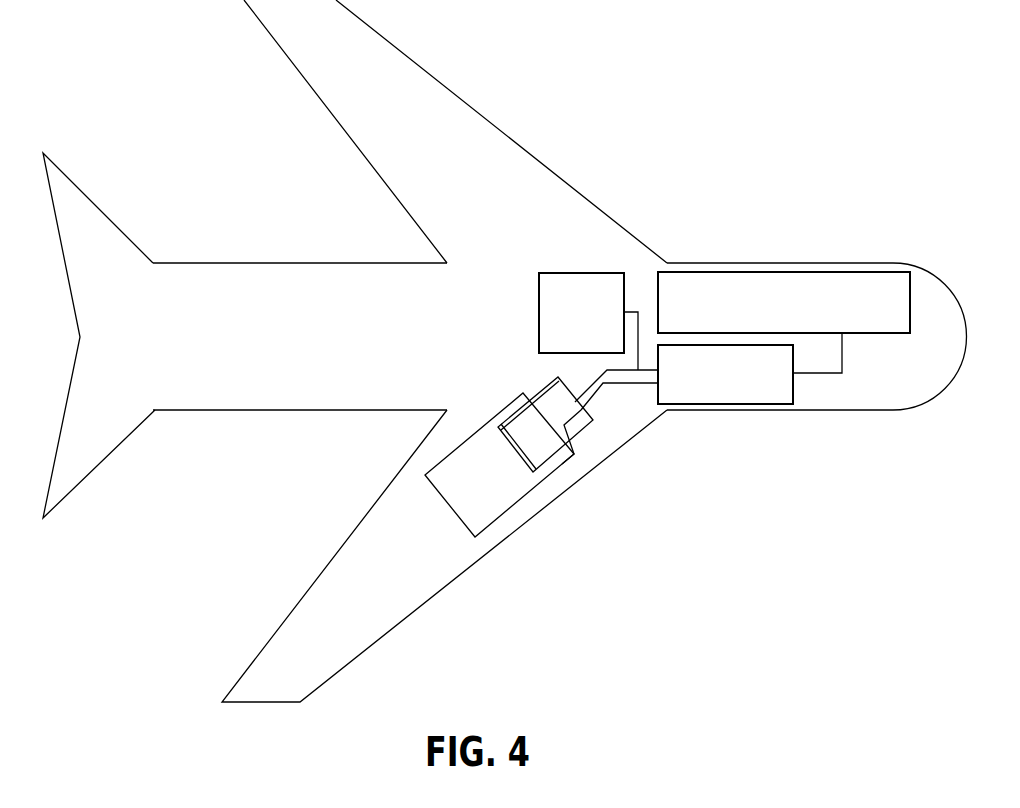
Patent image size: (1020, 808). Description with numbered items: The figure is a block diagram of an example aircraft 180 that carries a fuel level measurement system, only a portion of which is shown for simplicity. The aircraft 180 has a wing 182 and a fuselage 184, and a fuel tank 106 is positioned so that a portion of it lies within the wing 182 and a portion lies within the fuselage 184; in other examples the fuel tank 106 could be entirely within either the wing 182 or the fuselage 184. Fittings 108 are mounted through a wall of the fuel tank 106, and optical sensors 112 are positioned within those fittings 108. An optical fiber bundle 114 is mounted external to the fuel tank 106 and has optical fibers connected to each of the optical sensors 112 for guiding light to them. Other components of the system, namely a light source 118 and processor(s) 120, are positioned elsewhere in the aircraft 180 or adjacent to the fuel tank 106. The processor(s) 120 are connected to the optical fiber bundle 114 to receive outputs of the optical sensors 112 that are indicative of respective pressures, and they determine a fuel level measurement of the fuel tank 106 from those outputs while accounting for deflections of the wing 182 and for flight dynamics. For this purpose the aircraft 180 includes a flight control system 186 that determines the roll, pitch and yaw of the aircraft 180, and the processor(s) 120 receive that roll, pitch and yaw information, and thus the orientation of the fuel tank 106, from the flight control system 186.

The fuel tank 106 is at (500, 517).
The fittings 108 is at (547, 462).
The optical sensors 112 is at (562, 445).
The optical fiber bundle 114 is at (603, 384).
The light source 118 is at (597, 349).
The processor(s) 120 is at (740, 399).
The aircraft 180 is at (504, 351).
The wing 182 is at (410, 613).
The fuselage 184 is at (342, 410).
The flight control system 186 is at (799, 325).